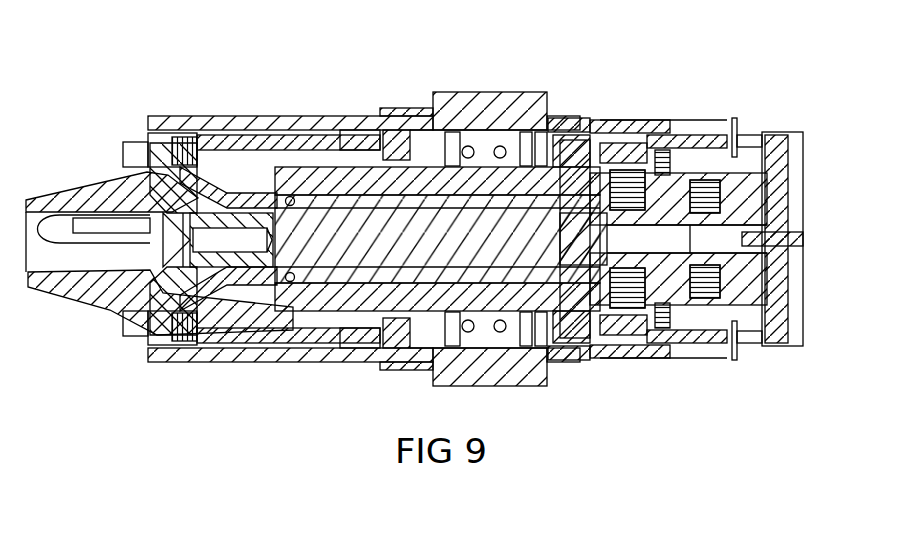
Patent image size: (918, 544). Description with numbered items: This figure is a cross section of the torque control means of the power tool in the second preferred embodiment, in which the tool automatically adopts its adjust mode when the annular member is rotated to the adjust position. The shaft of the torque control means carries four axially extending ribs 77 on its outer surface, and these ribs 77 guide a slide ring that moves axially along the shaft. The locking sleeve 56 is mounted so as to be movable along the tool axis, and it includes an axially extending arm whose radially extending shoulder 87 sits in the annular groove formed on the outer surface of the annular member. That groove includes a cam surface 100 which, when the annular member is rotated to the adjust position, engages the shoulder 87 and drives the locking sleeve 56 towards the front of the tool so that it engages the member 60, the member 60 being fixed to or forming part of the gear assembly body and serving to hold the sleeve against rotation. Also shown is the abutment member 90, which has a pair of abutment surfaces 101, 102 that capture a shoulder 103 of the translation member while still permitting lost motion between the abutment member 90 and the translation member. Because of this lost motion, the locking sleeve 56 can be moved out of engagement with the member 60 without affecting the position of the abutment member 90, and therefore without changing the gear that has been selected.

The locking sleeve 56 is at (178, 111).
The member 60 is at (150, 116).
The ribs 77 is at (507, 92).
The shoulder 87 is at (393, 130).
The cam surface 100 is at (375, 130).
The abutment surface 101 is at (592, 125).
The abutment surface 102 is at (548, 118).
The shoulder 103 is at (567, 118).
The abutment member 90 is at (676, 122).